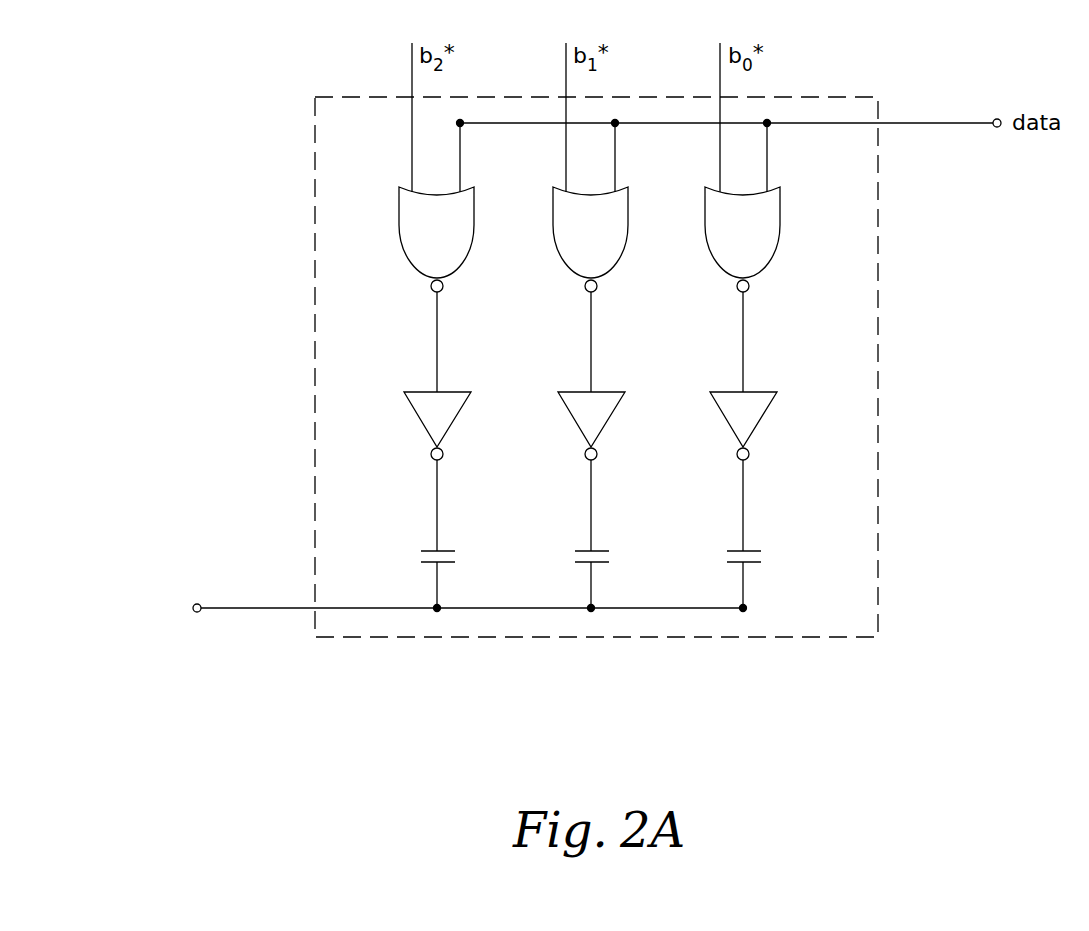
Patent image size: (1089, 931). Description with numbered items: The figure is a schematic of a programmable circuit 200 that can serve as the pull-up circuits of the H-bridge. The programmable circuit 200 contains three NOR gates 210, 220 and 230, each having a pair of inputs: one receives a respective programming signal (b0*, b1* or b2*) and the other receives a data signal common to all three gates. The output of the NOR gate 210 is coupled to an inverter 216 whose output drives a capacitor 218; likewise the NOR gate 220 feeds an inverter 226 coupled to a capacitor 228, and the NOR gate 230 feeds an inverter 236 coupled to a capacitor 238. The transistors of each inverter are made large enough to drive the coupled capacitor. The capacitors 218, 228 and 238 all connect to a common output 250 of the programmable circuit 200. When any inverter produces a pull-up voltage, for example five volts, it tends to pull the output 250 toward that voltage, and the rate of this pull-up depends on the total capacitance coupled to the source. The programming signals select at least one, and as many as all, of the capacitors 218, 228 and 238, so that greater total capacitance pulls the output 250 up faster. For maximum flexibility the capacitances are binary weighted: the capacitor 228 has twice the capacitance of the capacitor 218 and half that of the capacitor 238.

The programmable circuit 200 is at (410, 638).
The NOR gate 210 is at (767, 259).
The inverter 216 is at (761, 421).
The capacitor 218 is at (754, 550).
The NOR gate 220 is at (615, 259).
The inverter 226 is at (609, 421).
The capacitor 228 is at (602, 550).
The NOR gate 230 is at (461, 259).
The inverter 236 is at (455, 421).
The capacitor 238 is at (448, 550).
The output 250 is at (232, 611).